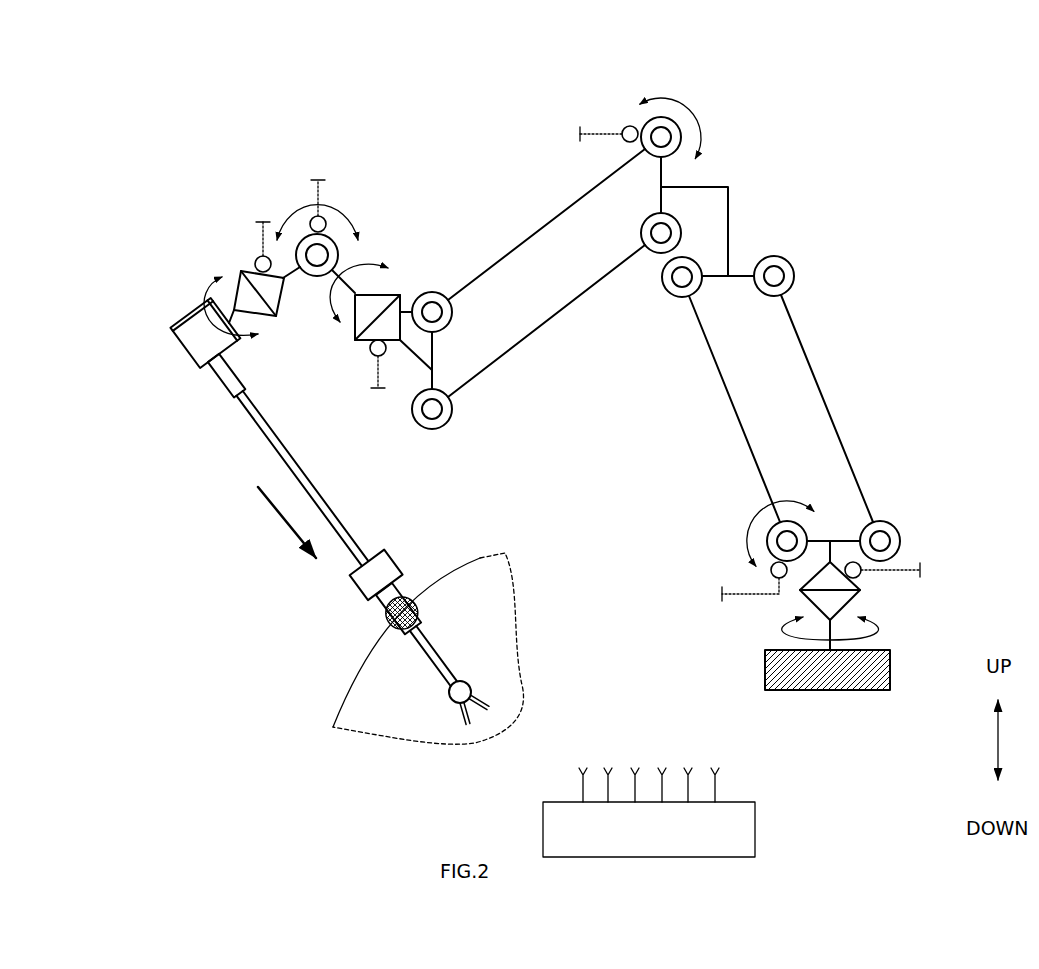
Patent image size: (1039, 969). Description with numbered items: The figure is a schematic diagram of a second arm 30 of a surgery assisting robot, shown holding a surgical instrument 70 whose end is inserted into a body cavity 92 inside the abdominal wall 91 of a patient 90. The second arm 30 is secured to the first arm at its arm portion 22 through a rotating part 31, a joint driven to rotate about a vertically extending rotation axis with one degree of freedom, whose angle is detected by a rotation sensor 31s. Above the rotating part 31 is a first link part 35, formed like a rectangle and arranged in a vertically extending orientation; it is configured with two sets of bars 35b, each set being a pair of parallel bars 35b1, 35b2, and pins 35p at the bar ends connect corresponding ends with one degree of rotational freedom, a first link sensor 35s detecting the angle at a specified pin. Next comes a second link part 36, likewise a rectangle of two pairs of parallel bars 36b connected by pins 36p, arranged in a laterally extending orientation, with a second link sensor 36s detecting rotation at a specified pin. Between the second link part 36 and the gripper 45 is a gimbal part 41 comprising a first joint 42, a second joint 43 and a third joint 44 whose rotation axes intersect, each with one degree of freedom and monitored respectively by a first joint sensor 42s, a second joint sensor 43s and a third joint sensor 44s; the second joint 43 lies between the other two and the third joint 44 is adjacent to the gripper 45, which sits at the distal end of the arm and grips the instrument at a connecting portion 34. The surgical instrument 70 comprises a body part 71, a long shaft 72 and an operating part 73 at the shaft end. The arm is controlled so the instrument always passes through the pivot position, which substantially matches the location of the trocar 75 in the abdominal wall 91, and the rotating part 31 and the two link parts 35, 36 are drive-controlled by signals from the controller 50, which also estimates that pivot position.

The second arm 30 is at (902, 194).
The second link part 36 is at (479, 209).
The pin 36p is at (681, 130).
The bar 36b is at (562, 212).
The second link sensor 36s is at (628, 126).
The first link part 35 is at (868, 351).
The pin 35p is at (796, 277).
The set of bars 35b is at (783, 343).
The bar 35b1 is at (735, 268).
The bar 35b2 is at (843, 538).
The first link sensor 35s is at (770, 572).
The rotating part 31 is at (862, 600).
The rotation sensor 31s is at (862, 575).
The arm portion 22 is at (768, 650).
The gimbal part 41 is at (322, 144).
The first joint 42 is at (388, 293).
The first joint sensor 42s is at (373, 355).
The second joint 43 is at (322, 278).
The second joint sensor 43s is at (320, 216).
The third joint 44 is at (252, 200).
The third joint sensor 44s is at (258, 257).
The connecting portion 34 is at (239, 272).
The surgical instrument 70 is at (186, 496).
The gripper 45 is at (186, 316).
The body part 71 is at (222, 378).
The shaft 72 is at (320, 496).
The trocar 75 is at (392, 552).
The operating part 73 is at (448, 695).
The patient 90 is at (296, 702).
The abdominal wall 91 is at (362, 668).
The body cavity 92 is at (521, 652).
The controller 50 is at (762, 830).